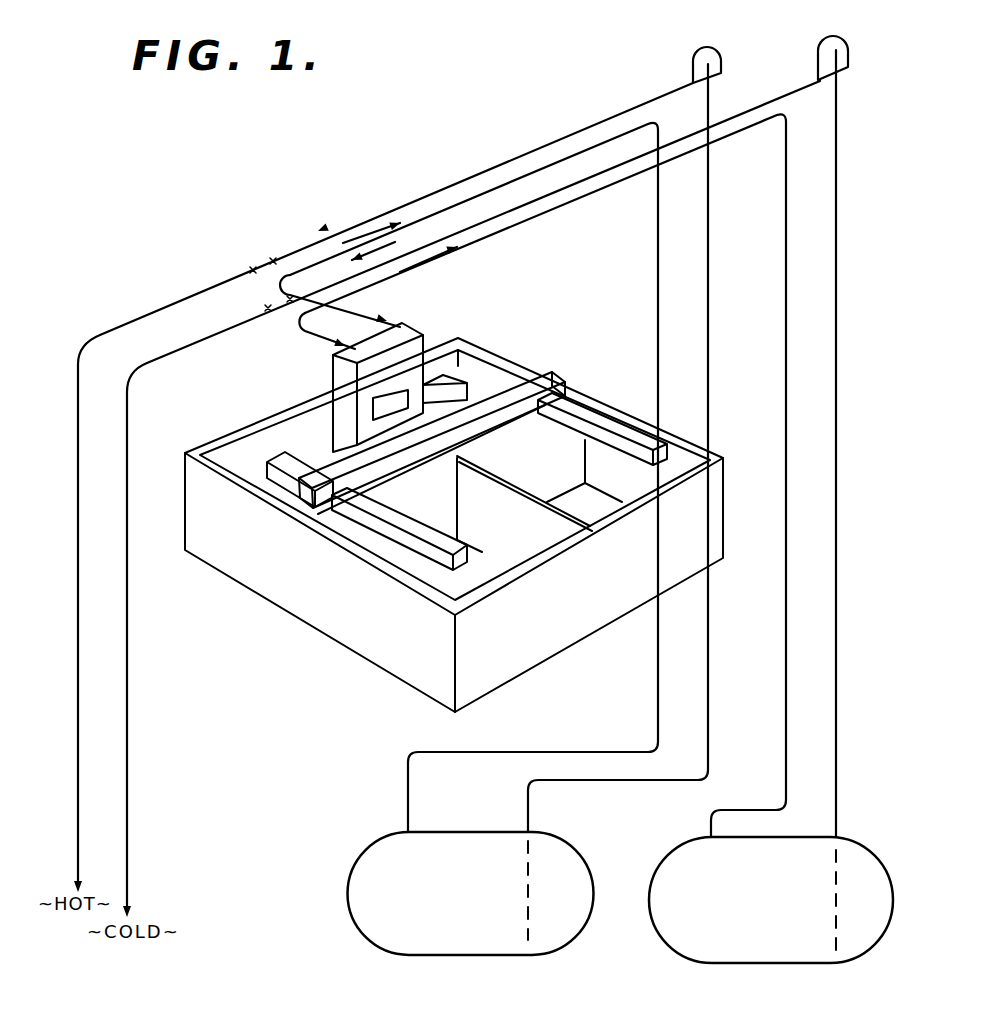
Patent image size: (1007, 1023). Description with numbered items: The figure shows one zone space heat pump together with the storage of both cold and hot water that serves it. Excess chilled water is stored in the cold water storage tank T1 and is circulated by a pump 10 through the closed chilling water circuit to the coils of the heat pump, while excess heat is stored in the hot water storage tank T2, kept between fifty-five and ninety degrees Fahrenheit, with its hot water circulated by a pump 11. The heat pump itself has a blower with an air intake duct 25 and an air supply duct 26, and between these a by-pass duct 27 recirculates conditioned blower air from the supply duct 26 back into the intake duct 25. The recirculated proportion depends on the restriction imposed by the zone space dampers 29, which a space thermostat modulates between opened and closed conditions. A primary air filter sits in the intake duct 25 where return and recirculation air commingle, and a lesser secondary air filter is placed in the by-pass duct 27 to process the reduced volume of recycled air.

The pump 10 is at (841, 46).
The pump 11 is at (717, 57).
The air intake duct 25 is at (505, 361).
The air supply duct 26 is at (337, 409).
The by-pass duct 27 is at (388, 415).
The zone space dampers 29 is at (276, 480).
The cold water storage tank T1 is at (715, 946).
The hot water storage tank T2 is at (408, 939).